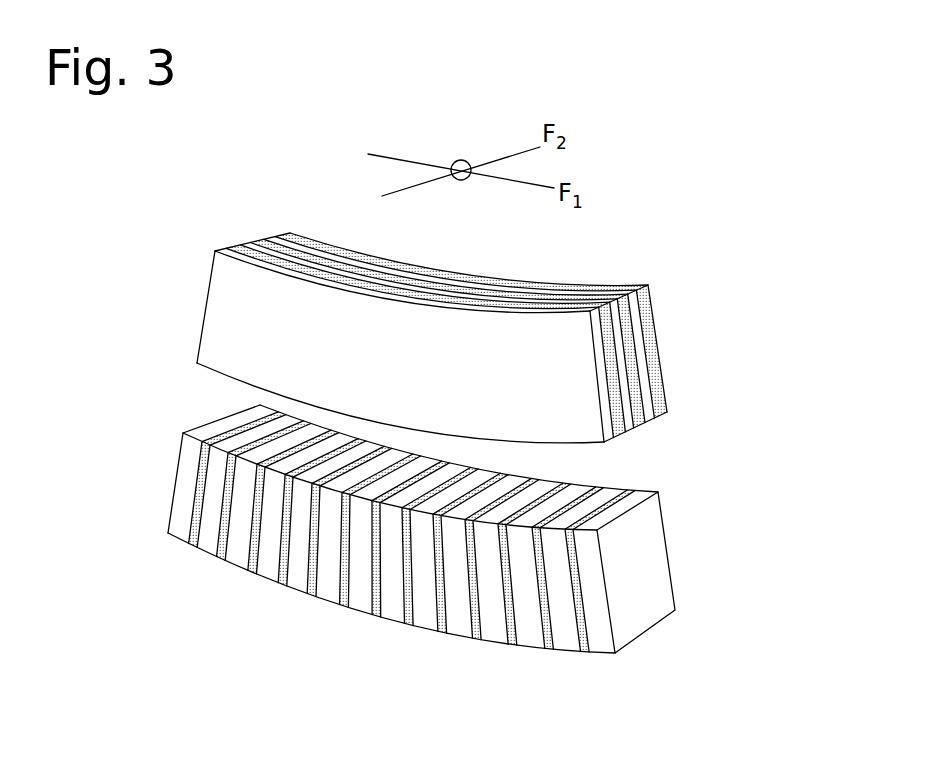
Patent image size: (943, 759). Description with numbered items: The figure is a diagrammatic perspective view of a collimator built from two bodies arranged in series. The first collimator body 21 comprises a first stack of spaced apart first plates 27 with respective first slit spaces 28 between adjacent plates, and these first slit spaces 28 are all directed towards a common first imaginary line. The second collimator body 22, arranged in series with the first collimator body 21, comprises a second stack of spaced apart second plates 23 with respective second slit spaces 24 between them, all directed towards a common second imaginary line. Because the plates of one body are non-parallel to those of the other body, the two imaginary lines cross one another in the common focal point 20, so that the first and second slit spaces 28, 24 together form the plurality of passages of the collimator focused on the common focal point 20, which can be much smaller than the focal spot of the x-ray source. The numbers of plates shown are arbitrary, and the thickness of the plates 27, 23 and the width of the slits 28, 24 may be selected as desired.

The common focal point 20 is at (454, 162).
The first collimator body 21 is at (491, 312).
The second collimator body 22 is at (482, 529).
The second plates 23 is at (205, 538).
The second slit spaces 24 is at (222, 540).
The first plates 27 is at (250, 243).
The first slit spaces 28 is at (302, 242).